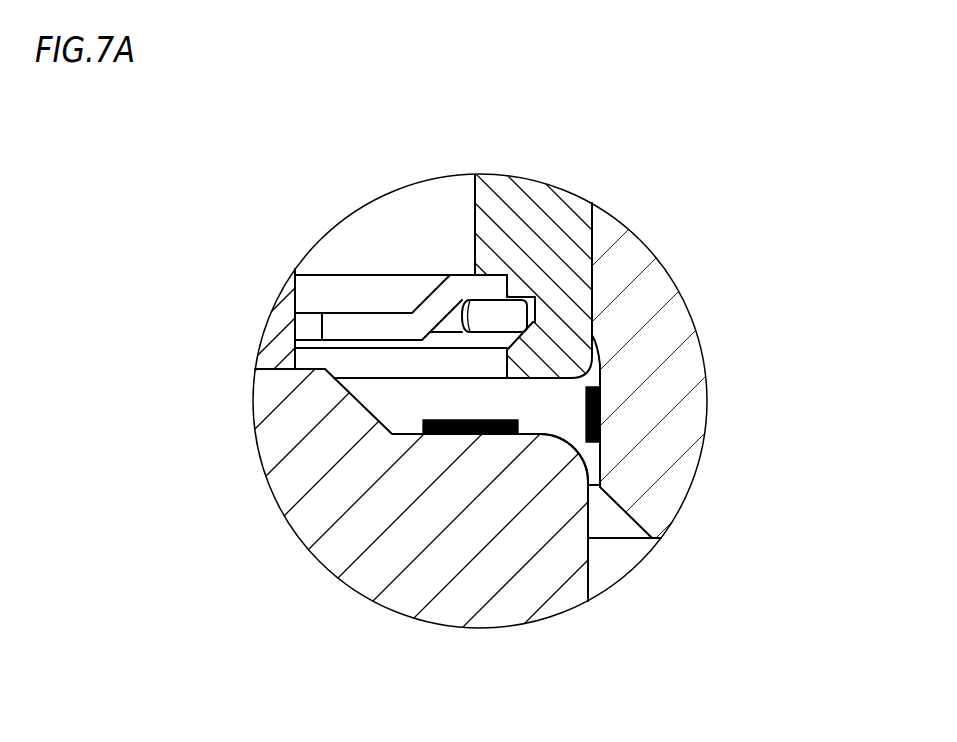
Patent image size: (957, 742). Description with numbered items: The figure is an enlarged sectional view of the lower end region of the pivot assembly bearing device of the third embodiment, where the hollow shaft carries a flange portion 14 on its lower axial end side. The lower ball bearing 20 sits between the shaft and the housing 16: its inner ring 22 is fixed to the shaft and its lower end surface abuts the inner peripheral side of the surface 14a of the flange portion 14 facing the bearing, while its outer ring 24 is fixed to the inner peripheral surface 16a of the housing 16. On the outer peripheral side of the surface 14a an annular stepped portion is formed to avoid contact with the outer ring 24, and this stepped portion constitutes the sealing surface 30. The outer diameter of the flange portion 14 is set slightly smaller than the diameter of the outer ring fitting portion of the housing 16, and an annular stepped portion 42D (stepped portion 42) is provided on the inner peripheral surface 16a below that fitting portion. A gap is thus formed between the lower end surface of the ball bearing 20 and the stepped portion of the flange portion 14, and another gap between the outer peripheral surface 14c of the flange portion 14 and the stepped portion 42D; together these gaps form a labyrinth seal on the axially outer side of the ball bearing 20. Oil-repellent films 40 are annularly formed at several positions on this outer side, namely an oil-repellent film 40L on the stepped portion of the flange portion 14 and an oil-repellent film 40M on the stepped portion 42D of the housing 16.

The flange portion 14 is at (337, 553).
The surface of the flange portion facing the ball bearing 14a is at (564, 458).
The outer peripheral surface of the flange portion 14c is at (590, 521).
The housing 16 is at (667, 407).
The inner peripheral surface of the housing 16a is at (658, 235).
The ball bearing 20 is at (596, 280).
The inner ring 22 is at (270, 340).
The outer ring 24 is at (523, 205).
The sealing surface 30 is at (589, 577).
The oil-repellent film 40 is at (595, 561).
The oil-repellent film 40L is at (470, 427).
The oil-repellent film 40M is at (592, 414).
The stepped portion 42 is at (658, 331).
The annular stepped portion 42D is at (494, 316).